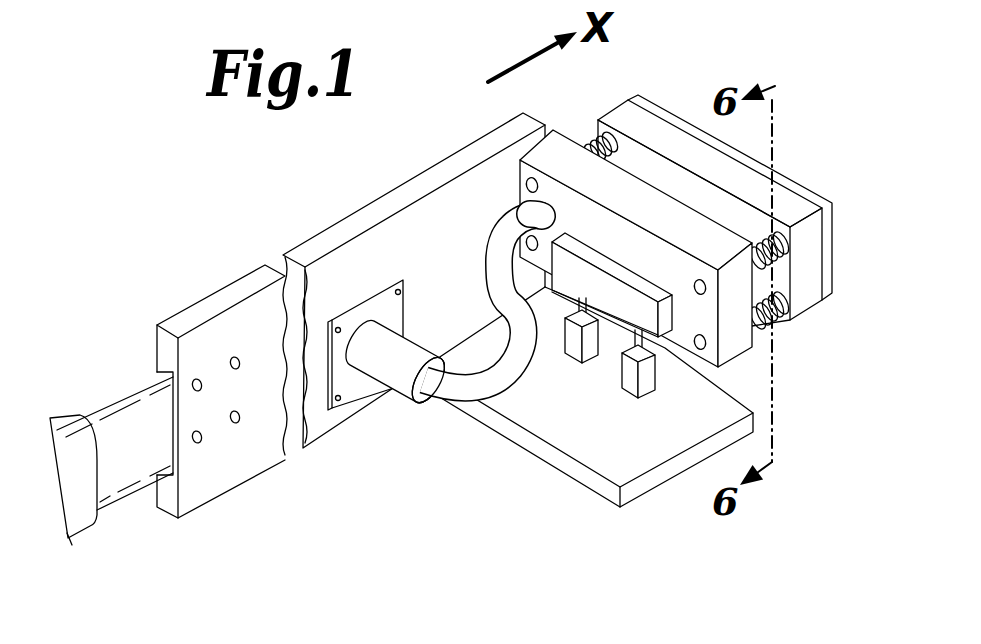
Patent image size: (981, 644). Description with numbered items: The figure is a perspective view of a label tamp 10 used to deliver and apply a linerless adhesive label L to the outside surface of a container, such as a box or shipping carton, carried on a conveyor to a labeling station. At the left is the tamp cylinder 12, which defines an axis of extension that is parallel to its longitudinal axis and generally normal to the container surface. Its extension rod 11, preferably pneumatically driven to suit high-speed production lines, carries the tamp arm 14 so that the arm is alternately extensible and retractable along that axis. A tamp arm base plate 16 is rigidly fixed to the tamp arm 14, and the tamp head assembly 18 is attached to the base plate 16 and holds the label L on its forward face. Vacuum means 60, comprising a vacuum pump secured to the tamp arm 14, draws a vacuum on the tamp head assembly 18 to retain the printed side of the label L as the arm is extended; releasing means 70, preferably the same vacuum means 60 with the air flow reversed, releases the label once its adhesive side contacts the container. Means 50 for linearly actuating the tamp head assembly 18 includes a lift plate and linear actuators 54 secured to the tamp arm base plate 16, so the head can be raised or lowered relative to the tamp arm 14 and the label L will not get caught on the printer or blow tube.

The label tamp 10 is at (195, 223).
The extension rod 11 is at (108, 403).
The tamp cylinder 12 is at (68, 413).
The tamp arm 14 is at (313, 237).
The tamp arm base plate 16 is at (592, 409).
The tamp head assembly 18 is at (812, 348).
The means for linearly actuating 50 is at (612, 407).
The linear actuator 54 is at (652, 373).
The vacuum means 60 is at (389, 381).
The releasing means 70 is at (419, 424).
The linerless adhesive label L is at (662, 110).